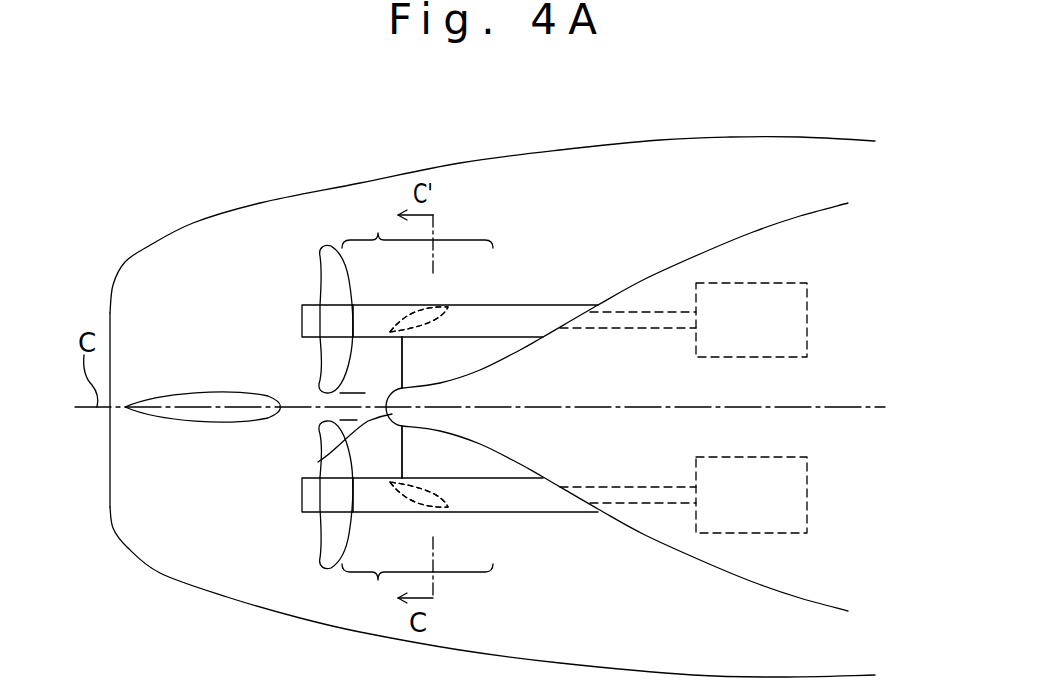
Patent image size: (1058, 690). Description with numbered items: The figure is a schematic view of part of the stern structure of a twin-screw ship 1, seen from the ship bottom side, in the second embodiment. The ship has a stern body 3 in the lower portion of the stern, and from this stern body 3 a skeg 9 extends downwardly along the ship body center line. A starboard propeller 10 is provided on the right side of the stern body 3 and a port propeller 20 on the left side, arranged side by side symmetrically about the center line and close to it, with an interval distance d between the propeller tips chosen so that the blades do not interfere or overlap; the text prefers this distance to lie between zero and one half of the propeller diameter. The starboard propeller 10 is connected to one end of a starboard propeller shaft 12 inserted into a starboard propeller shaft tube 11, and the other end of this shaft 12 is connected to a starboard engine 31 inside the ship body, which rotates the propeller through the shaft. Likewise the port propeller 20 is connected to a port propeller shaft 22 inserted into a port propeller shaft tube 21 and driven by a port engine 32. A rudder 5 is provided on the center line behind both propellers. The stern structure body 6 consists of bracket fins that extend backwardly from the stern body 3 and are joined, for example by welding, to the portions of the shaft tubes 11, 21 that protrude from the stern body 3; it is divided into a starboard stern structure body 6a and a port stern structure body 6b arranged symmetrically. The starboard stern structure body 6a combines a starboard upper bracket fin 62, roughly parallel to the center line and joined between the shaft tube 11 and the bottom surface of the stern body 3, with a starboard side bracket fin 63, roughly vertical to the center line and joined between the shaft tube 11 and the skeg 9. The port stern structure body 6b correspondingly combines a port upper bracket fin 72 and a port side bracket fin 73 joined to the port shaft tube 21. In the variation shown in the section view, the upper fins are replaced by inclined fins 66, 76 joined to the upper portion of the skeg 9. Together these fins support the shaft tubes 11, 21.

The twin-screw ship 1 is at (195, 173).
The stern body 3 is at (753, 232).
The rudder 5 is at (215, 423).
The stern structure body 6 is at (488, 580).
The starboard stern structure body 6a is at (417, 228).
The port stern structure body 6b is at (417, 586).
The skeg 9 is at (318, 461).
The starboard propeller 10 is at (318, 272).
The starboard propeller shaft tube 11 is at (525, 308).
The starboard propeller shaft 12 is at (657, 312).
The port propeller 20 is at (318, 540).
The port propeller shaft tube 21 is at (525, 508).
The port propeller shaft 22 is at (657, 503).
The starboard engine 31 is at (807, 310).
The port engine 32 is at (807, 505).
The starboard upper bracket fin 62 is at (432, 306).
The starboard side bracket fin 63 is at (402, 363).
The starboard upper bracket fin 66 is at (419, 319).
The port upper bracket fin 72 is at (432, 508).
The port side bracket fin 73 is at (402, 455).
The port upper bracket fin 76 is at (419, 494).
The interval distance d is at (353, 393).